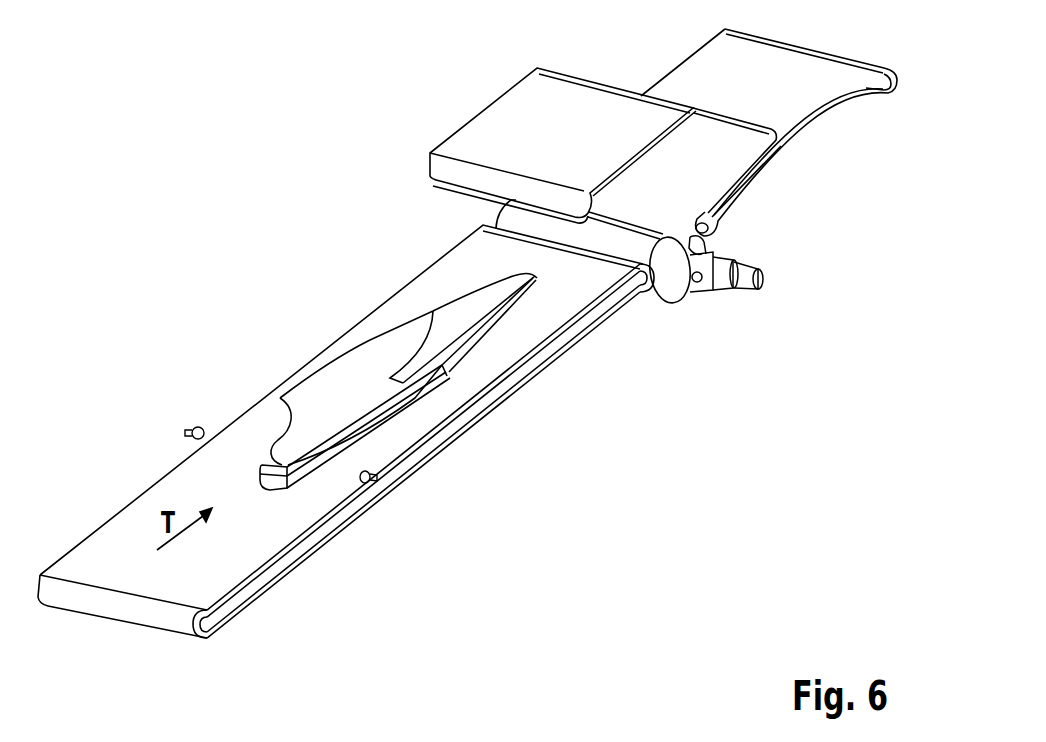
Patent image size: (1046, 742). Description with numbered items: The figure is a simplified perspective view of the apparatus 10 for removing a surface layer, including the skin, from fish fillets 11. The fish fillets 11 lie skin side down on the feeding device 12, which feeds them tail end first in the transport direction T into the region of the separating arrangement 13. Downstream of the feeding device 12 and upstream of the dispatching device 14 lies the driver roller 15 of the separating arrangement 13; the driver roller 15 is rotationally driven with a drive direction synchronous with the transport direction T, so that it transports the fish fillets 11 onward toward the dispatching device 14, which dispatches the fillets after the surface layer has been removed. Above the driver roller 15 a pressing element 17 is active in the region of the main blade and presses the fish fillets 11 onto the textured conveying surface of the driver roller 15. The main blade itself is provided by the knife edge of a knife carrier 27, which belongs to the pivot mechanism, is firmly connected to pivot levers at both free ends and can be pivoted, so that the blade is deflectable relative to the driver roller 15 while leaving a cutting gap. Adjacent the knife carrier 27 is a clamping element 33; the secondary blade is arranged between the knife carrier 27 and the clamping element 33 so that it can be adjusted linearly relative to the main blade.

The apparatus 10 is at (262, 162).
The fish fillets 11 is at (327, 385).
The feeding device 12 is at (265, 523).
The separating arrangement 13 is at (706, 299).
The dispatching device 14 is at (807, 102).
The driver roller 15 is at (663, 294).
The pressing element 17 is at (487, 127).
The knife carrier 27 is at (703, 245).
The clamping element 33 is at (713, 224).